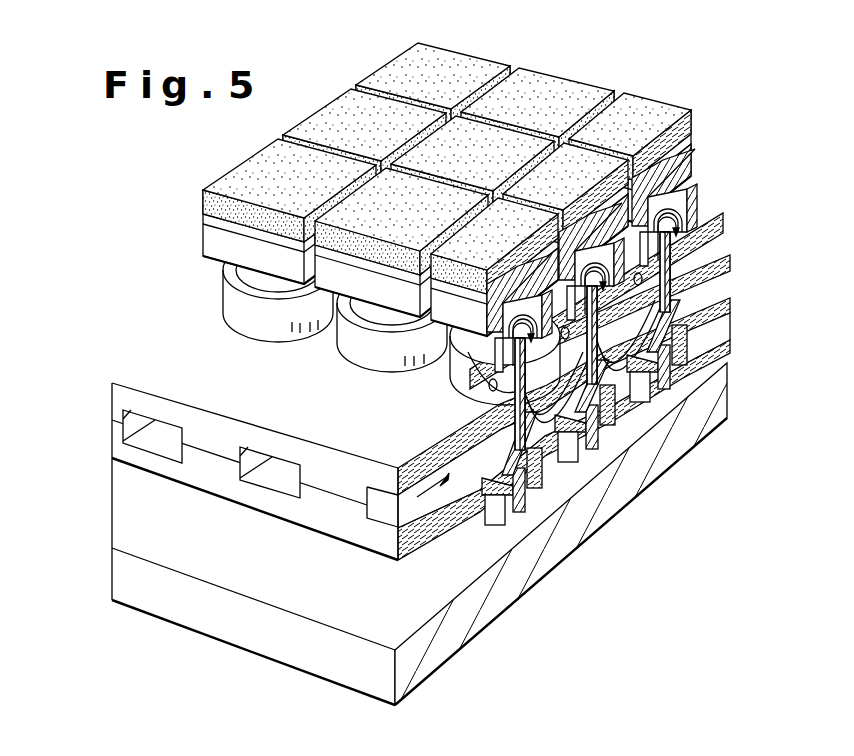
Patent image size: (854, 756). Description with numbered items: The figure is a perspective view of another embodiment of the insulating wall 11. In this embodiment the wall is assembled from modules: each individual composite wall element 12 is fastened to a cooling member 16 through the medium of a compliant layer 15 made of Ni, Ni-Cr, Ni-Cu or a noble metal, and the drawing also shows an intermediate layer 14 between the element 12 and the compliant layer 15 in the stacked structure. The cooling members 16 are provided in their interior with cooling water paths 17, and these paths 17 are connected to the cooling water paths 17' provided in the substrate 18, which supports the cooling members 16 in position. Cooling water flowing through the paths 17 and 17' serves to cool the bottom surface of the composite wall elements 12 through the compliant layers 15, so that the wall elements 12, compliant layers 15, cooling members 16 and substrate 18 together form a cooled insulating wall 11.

The insulating wall 11 is at (611, 68).
The composite wall elements 12 is at (533, 85).
The bonding layer 14 is at (243, 226).
The compliant layers 15 is at (248, 257).
The cooling members 16 is at (252, 283).
The cooling water paths 17 is at (616, 337).
The cooling water paths 17' is at (180, 454).
The substrate 18 is at (215, 488).